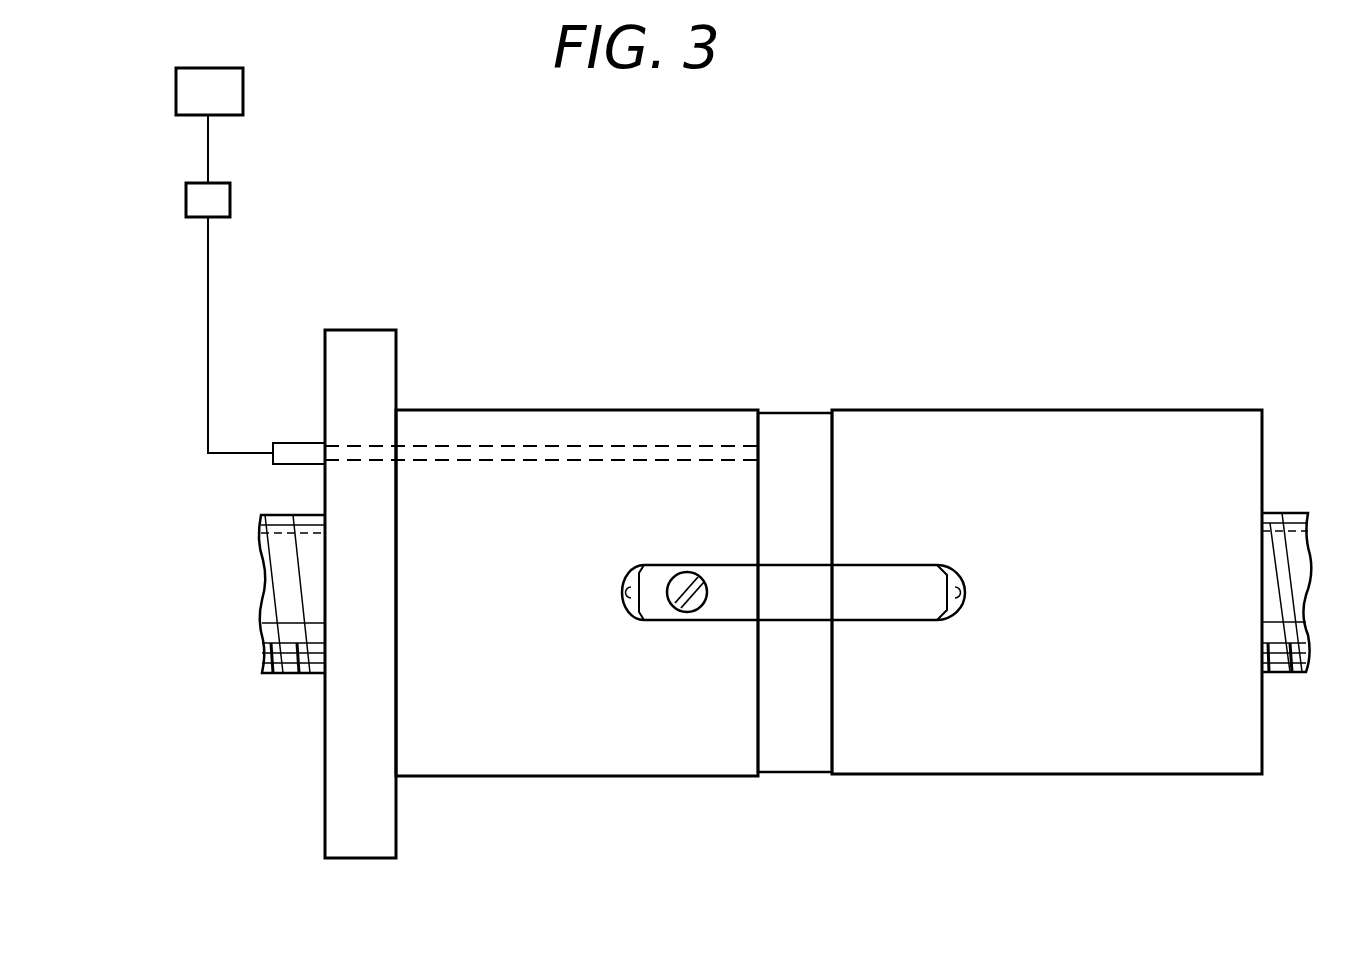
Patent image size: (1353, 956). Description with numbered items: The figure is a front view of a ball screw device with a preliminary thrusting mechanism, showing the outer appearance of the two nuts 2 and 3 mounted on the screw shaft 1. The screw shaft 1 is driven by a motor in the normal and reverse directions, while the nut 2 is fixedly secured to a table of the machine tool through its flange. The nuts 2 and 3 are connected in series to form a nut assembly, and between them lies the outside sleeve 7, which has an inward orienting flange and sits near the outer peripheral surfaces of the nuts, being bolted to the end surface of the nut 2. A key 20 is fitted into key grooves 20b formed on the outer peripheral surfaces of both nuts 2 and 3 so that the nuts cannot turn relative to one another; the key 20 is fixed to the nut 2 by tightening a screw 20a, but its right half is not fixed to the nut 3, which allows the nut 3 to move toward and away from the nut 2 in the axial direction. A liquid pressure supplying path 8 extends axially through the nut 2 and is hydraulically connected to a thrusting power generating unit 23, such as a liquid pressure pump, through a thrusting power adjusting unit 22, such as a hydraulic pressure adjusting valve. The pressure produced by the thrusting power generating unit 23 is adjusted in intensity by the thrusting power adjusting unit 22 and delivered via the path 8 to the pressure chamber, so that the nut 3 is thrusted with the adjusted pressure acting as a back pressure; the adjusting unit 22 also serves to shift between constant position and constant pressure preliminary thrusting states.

The screw shaft 1 is at (293, 672).
The nut 2 is at (616, 763).
The nut 3 is at (1060, 763).
The outside sleeve 7 is at (806, 763).
The liquid pressure supplying path 8 is at (483, 445).
The key 20 is at (785, 591).
The screw 20a is at (702, 613).
The key grooves 20b is at (622, 598).
The thrusting power adjusting unit 22 is at (230, 204).
The thrusting power generating unit 23 is at (243, 99).